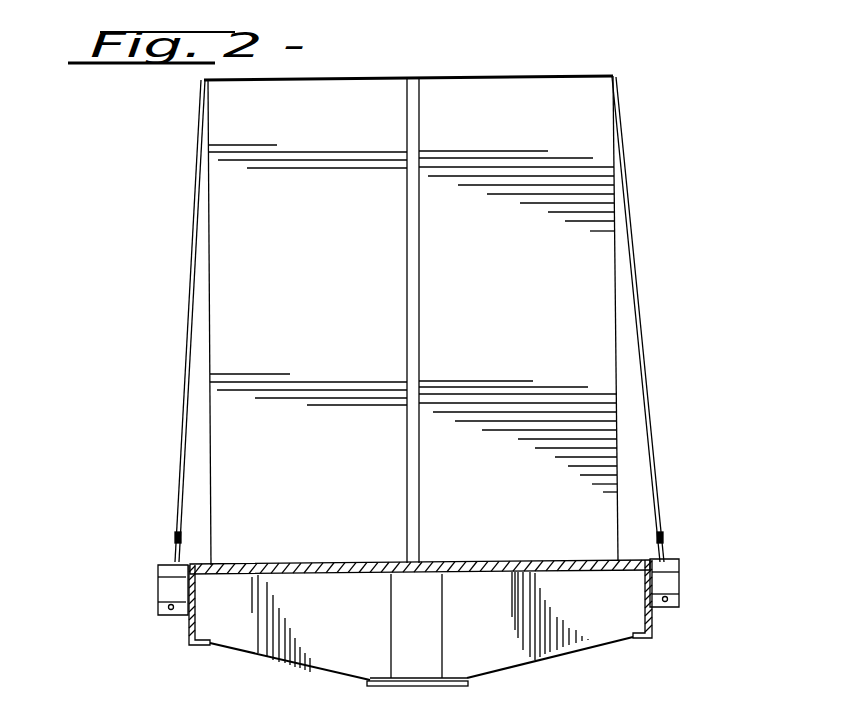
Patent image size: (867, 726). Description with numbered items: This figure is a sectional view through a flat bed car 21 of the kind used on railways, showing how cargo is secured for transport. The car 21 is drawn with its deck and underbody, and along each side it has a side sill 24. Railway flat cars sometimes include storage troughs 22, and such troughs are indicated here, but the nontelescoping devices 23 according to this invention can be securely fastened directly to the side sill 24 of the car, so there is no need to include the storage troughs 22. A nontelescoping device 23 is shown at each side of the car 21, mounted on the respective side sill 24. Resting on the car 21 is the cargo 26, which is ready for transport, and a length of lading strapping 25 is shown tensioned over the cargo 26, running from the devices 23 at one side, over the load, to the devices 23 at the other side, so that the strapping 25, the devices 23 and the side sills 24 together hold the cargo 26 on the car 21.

The flat bed car 21 is at (312, 571).
The storage troughs 22 is at (158, 566).
The nontelescoping devices 23 is at (160, 590).
The side sill 24 is at (190, 625).
The lading strapping 25 is at (642, 331).
The cargo 26 is at (368, 311).